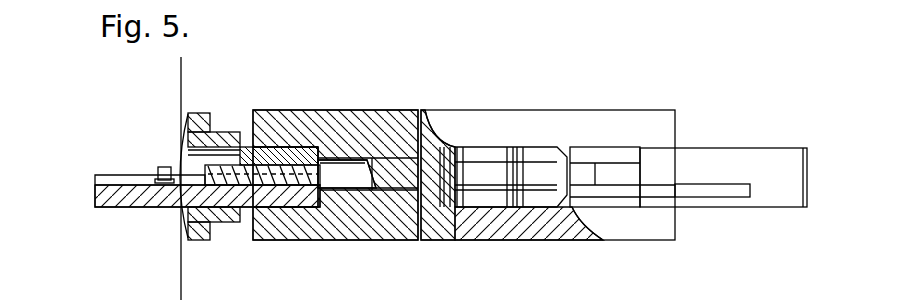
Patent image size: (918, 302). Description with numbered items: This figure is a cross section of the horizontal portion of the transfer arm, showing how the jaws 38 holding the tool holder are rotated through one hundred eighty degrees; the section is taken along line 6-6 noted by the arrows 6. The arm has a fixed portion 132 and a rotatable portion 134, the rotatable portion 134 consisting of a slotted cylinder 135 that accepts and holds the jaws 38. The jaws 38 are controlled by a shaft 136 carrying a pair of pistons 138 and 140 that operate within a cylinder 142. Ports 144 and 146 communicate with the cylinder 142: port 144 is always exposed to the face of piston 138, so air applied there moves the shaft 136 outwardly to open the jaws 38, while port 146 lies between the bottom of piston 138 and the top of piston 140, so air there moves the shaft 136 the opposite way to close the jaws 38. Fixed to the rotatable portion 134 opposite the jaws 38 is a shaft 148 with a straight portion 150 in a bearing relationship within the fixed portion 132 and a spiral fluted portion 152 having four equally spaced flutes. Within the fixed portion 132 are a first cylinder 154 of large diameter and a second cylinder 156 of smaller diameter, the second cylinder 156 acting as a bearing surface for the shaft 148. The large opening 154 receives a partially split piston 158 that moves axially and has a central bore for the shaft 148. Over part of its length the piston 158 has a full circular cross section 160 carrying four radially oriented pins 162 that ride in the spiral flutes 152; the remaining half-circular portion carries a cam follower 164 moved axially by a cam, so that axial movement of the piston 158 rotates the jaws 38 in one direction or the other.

The section line 6- 6 is at (174, 85).
The jaws 38 is at (715, 155).
The fixed portion 132 is at (335, 174).
The rotatable portion 134 is at (531, 181).
The slotted cylinder 135 is at (592, 153).
The shaft 136 is at (572, 222).
The piston 138 is at (430, 200).
The piston 140 is at (500, 192).
The cylinder 142 is at (440, 155).
The port 144 is at (435, 225).
The port 146 is at (522, 225).
The shaft 148 is at (377, 215).
The straight portion 150 is at (393, 163).
The spiral fluted portion 152 is at (247, 205).
The first cylinder 154 is at (275, 150).
The second cylinder 156 is at (355, 195).
The partially split piston 158 is at (118, 198).
The full circular cross section 160 is at (222, 150).
The radially oriented pins 162 is at (310, 170).
The cam follower 164 is at (162, 166).